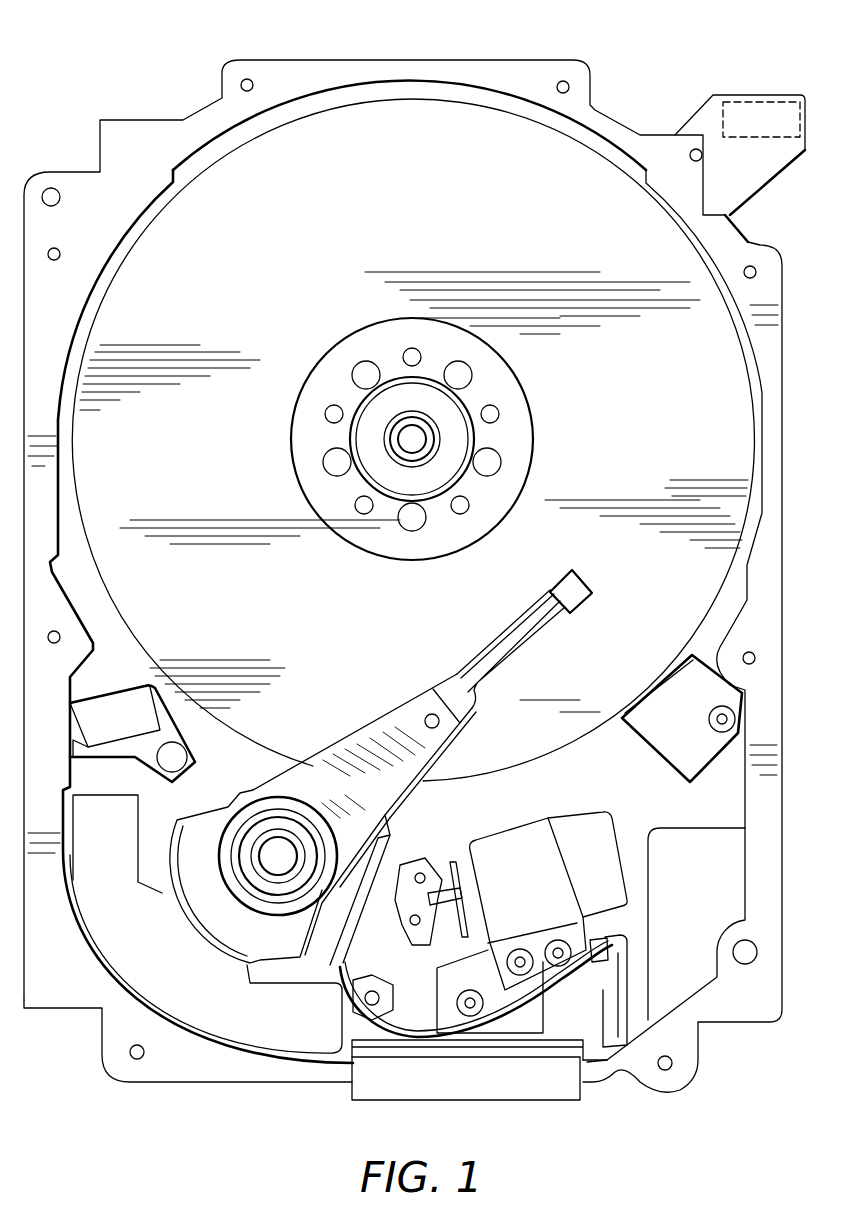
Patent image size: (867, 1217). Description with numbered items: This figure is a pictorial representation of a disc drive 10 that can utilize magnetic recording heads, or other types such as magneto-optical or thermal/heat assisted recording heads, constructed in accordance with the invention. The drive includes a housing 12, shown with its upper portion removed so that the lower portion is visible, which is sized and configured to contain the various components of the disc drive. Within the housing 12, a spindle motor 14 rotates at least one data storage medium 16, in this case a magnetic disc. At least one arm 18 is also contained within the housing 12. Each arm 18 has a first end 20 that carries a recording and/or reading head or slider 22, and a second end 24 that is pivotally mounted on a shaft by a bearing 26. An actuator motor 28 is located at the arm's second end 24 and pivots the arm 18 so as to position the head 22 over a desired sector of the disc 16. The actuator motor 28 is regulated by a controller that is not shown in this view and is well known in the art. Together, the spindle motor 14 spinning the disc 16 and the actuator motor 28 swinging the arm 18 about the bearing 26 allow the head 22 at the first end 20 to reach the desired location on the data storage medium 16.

The disc drive 10 is at (80, 108).
The housing 12 is at (545, 72).
The spindle motor 14 is at (405, 442).
The data storage medium 16 is at (320, 231).
The arm 18 is at (395, 735).
The first end 20 is at (517, 622).
The head 22 is at (575, 588).
The second end 24 is at (303, 795).
The bearing 26 is at (268, 845).
The actuator motor 28 is at (172, 975).